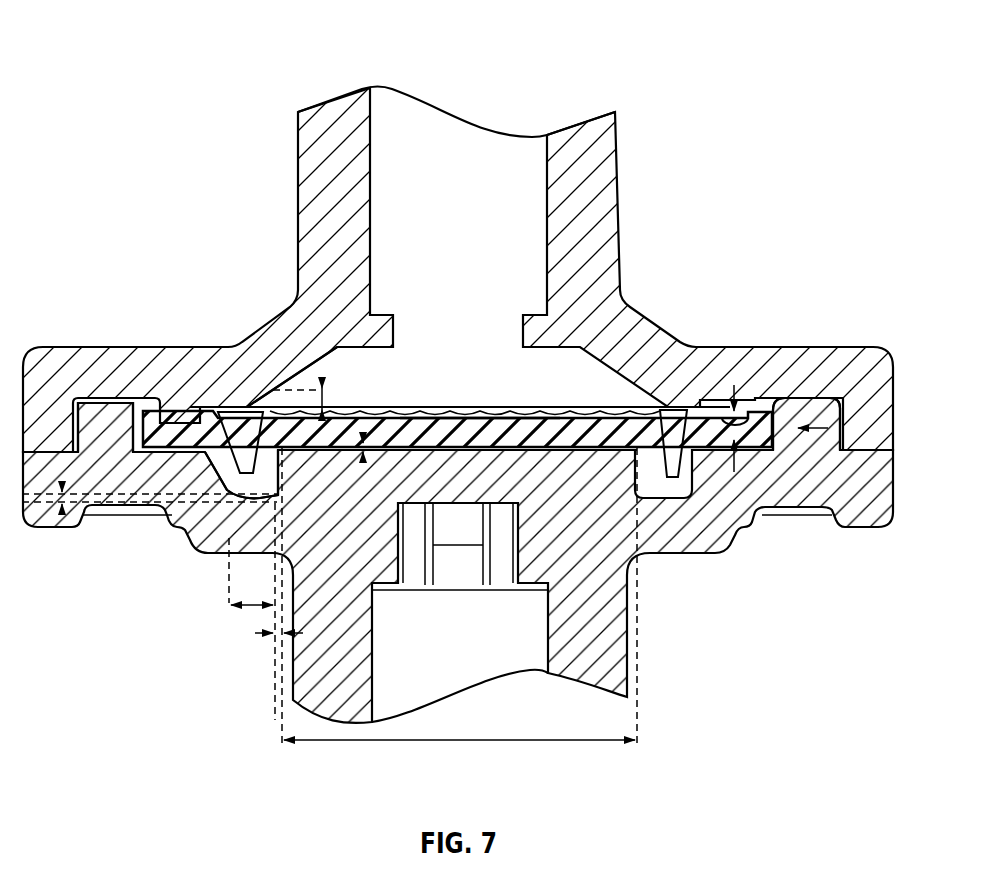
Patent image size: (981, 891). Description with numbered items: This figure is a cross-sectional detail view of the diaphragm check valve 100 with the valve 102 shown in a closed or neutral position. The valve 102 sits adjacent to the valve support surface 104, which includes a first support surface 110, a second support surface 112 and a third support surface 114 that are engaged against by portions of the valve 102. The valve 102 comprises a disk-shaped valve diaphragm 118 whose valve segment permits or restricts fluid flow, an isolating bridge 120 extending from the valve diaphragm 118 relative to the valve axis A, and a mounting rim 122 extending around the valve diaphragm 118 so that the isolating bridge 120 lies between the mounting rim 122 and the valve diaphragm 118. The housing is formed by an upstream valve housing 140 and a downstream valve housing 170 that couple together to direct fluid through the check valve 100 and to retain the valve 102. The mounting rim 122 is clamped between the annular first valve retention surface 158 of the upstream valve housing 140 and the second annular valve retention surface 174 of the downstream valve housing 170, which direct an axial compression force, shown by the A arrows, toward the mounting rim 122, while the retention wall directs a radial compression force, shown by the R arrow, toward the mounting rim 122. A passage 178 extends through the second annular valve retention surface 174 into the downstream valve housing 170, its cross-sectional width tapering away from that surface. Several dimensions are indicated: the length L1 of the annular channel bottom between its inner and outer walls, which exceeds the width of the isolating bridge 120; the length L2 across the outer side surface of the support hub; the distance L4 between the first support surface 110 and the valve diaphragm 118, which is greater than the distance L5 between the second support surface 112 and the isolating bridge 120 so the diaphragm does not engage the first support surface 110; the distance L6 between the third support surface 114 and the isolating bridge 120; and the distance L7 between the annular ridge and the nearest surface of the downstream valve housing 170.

The diaphragm check valve 100 is at (150, 40).
The valve 102 is at (384, 404).
The valve support surface 104 is at (556, 463).
The first support surface 110 is at (514, 456).
The second support surface 112 is at (240, 506).
The third support surface 114 is at (292, 476).
The valve diaphragm 118 is at (487, 434).
The isolating bridge 120 is at (224, 467).
The mounting rim 122 is at (384, 501).
The upstream valve housing 140 is at (852, 604).
The annular first valve retention surface 158 is at (766, 457).
The downstream valve housing 170 is at (852, 248).
The second annular valve retention surface 174 is at (694, 402).
The passage 178 is at (287, 372).
The valve axis / axial compression force arrows A is at (740, 386).
The radial compression force arrow R is at (828, 427).
The length L1 is at (252, 608).
The length L2 is at (458, 742).
The distance L4 is at (366, 452).
The distance L5 is at (62, 514).
The distance L6 is at (266, 638).
The distance L7 is at (323, 385).